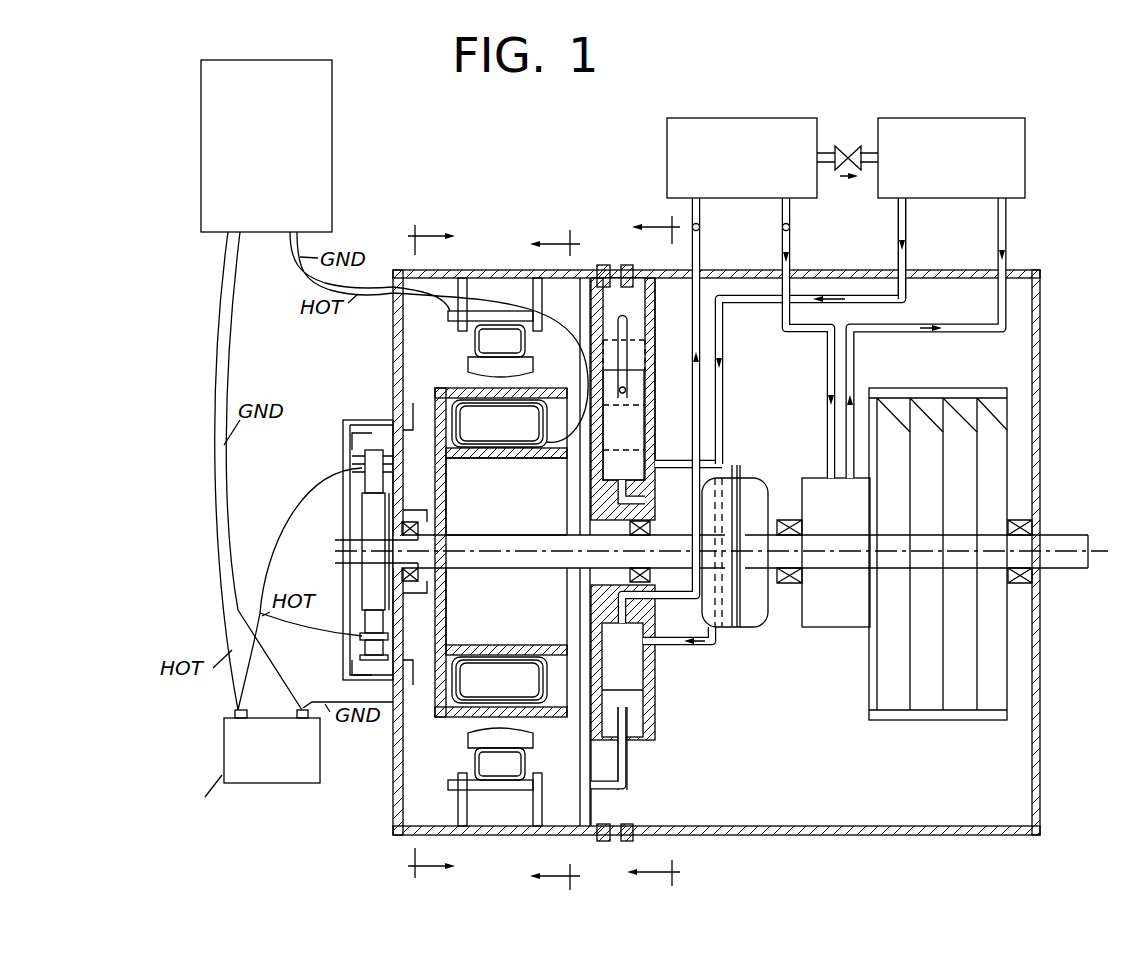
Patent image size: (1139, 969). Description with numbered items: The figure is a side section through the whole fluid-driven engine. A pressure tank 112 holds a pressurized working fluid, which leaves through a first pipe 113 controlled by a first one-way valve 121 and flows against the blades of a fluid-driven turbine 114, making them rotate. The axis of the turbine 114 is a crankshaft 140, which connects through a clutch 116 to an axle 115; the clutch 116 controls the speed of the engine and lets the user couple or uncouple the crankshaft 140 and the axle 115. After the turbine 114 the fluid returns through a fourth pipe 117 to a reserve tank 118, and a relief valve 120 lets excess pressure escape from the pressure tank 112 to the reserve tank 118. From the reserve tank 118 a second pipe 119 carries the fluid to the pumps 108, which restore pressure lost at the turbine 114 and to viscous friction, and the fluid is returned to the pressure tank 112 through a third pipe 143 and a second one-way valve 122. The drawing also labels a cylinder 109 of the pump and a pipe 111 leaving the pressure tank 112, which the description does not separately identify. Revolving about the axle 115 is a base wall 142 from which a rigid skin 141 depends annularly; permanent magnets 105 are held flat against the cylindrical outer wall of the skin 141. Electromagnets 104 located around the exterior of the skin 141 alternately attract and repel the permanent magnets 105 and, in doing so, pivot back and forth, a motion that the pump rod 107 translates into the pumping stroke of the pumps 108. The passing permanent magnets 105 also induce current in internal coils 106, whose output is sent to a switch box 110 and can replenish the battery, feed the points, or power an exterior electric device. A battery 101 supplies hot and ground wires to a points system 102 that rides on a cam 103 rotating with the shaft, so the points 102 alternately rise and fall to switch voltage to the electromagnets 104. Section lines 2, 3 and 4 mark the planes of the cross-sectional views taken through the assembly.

The battery 101 is at (318, 778).
The points system 102 is at (355, 452).
The cam 103 is at (362, 510).
The electromagnets 104 is at (448, 317).
The permanent magnets 105 is at (475, 390).
The internal coils 106 is at (455, 425).
The pump rod 107 is at (618, 539).
The pumps 108 is at (632, 350).
The cylinder 109 is at (655, 392).
The switch box 110 is at (266, 146).
The pipe 111 is at (690, 244).
The pressure tank 112 is at (742, 158).
The first pipe 113 is at (802, 333).
The fluid-driven turbine 114 is at (930, 720).
The axle 115 is at (508, 568).
The clutch 116 is at (757, 628).
The fourth pipe 117 is at (996, 228).
The reserve tank 118 is at (951, 158).
The second pipe 119 is at (897, 224).
The relief valve 120 is at (848, 148).
The first one-way valve 121 is at (782, 229).
The second one-way valve 122 is at (716, 214).
The crankshaft 140 is at (1062, 544).
The rigid skin 141 is at (455, 720).
The base wall 142 is at (452, 625).
The third pipe 143 is at (672, 463).
The section line 2 is at (426, 551).
The section line 3 is at (555, 561).
The section line 4 is at (653, 554).